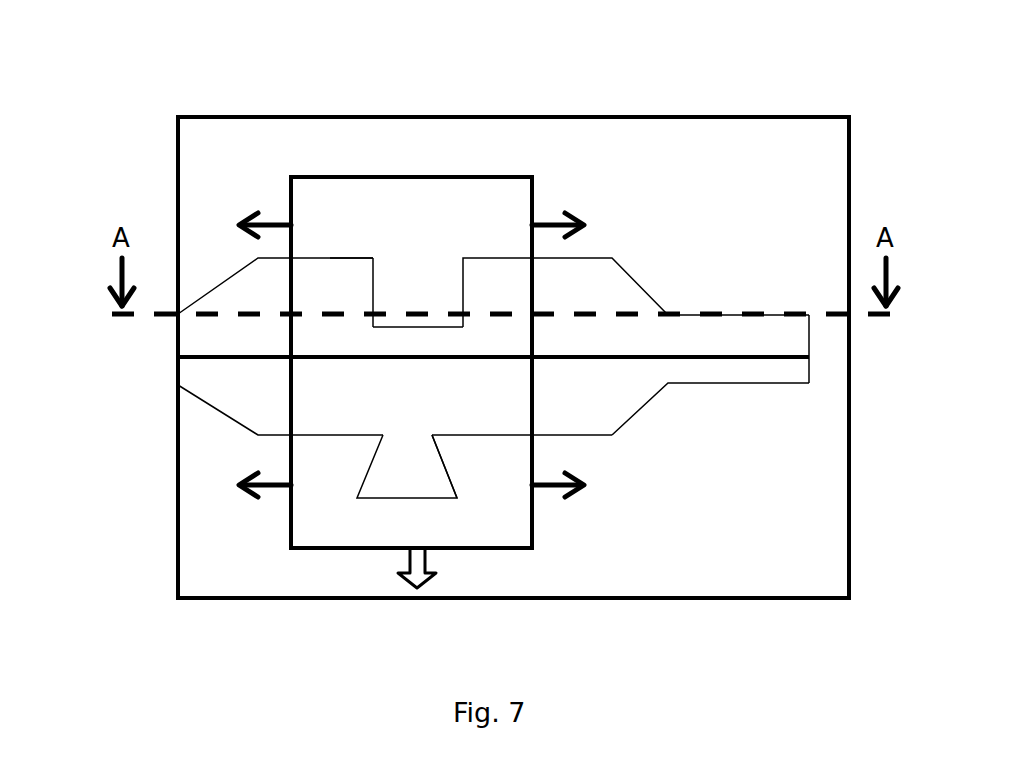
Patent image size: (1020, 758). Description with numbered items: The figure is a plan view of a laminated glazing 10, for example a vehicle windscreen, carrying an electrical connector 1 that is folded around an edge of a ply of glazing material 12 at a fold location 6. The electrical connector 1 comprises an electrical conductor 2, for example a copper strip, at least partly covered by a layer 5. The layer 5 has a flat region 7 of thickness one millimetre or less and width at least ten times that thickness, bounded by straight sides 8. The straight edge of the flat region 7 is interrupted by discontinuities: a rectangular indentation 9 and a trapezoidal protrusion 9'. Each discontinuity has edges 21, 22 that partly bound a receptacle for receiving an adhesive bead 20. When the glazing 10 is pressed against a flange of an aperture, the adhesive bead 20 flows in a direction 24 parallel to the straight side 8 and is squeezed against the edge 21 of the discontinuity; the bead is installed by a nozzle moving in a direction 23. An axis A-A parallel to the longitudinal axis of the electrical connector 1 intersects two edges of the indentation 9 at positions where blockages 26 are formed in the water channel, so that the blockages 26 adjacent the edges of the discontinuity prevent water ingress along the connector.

The glazing 10 is at (135, 80).
The second ply of glazing material 12 is at (178, 160).
The adhesive bead 20 is at (532, 177).
The flow direction 24 is at (578, 500).
The direction of nozzle movement 23 is at (432, 578).
The electrical conductor 2 is at (178, 358).
The electrical connector 1 is at (783, 442).
The layer 5 is at (810, 384).
The fold location 6 is at (219, 410).
The flat region 7 is at (313, 254).
The straight side 8 is at (355, 256).
The edge of discontinuity 21 is at (373, 252).
The blockage 26 is at (452, 314).
The indentation 9 is at (564, 183).
The edge of discontinuity 22 is at (357, 499).
The protrusion 9' is at (514, 543).